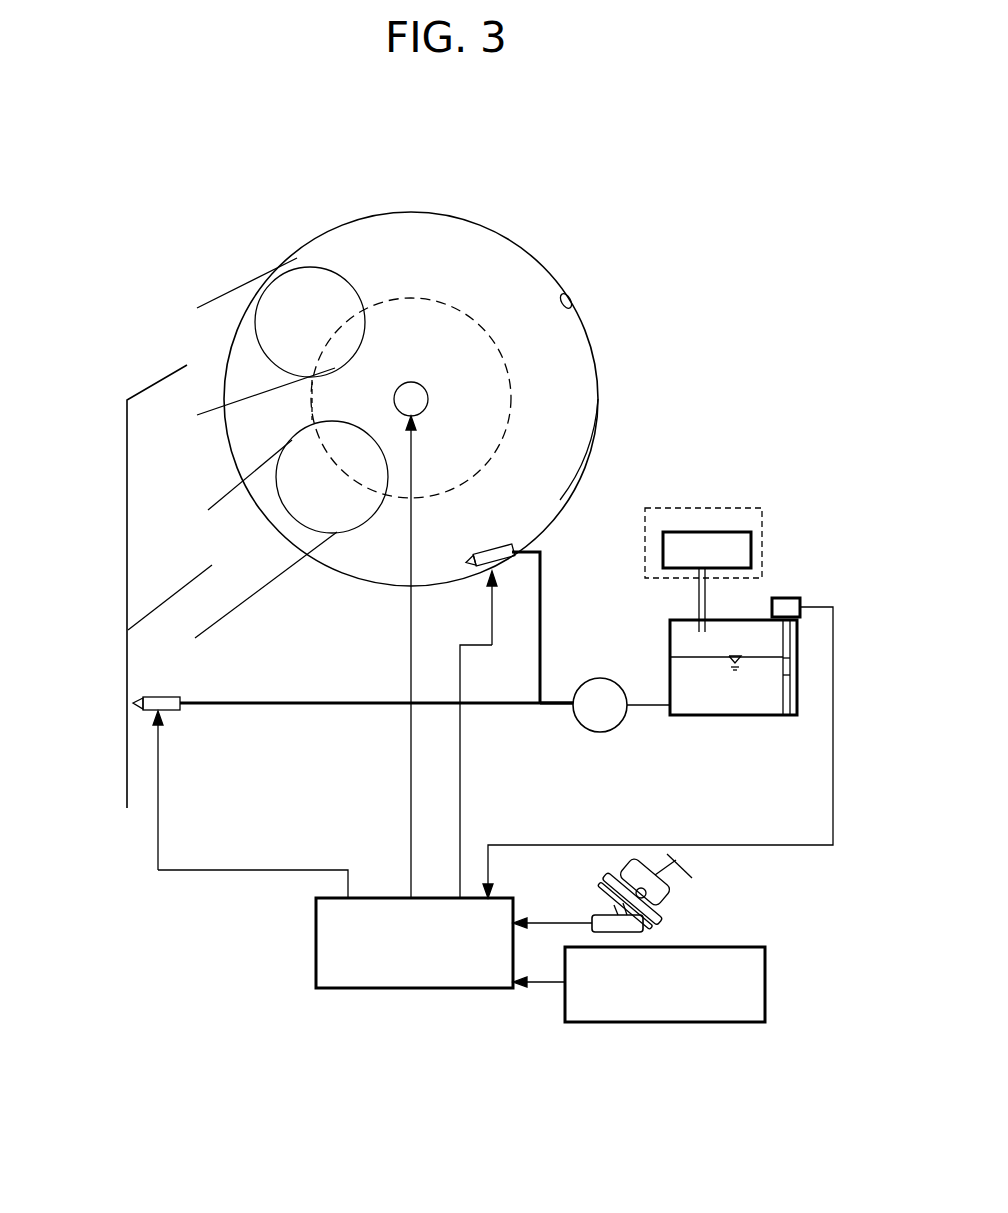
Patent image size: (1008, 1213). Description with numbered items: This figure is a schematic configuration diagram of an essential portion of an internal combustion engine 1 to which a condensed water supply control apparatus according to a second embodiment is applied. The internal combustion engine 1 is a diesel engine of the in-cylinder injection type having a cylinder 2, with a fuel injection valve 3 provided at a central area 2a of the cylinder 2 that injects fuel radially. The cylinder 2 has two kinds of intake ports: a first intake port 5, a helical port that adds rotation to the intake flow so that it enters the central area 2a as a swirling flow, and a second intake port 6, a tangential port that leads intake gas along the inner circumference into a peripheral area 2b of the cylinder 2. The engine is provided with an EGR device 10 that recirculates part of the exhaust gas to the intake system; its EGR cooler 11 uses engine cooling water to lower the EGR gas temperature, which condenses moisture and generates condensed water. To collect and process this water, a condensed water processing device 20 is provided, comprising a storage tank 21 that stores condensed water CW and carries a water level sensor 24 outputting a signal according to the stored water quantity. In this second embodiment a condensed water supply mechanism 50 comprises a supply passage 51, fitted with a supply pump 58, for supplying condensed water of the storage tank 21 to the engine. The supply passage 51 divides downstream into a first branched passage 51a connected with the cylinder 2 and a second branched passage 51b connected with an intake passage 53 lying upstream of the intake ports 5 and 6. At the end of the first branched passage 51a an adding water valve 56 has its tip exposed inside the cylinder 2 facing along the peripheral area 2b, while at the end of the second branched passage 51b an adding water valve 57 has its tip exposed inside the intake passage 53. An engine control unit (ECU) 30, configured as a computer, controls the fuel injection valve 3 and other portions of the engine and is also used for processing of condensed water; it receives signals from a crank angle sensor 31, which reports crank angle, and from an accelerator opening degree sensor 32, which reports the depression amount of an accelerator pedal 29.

The internal combustion engine 1 is at (570, 226).
The cylinder 2 is at (578, 312).
The central area 2a is at (513, 385).
The peripheral area 2b is at (560, 423).
The fuel injection valve 3 is at (429, 395).
The first intake port 5 is at (268, 565).
The second intake port 6 is at (228, 304).
The EGR device 10 is at (706, 508).
The EGR cooler 11 is at (668, 544).
The condensed water processing device 20 is at (805, 490).
The storage tank 21 is at (668, 622).
The water level sensor 24 is at (786, 598).
The accelerator pedal 29 is at (602, 875).
The engine control unit (ECU) 30 is at (316, 940).
The crank angle sensor 31 is at (768, 982).
The accelerator opening degree sensor 32 is at (652, 925).
The condensed water supply mechanism 50 is at (664, 736).
The supply passage 51 is at (550, 716).
The first branched passage 51a is at (541, 583).
The second branched passage 51b is at (312, 700).
The intake passage 53 is at (127, 570).
The adding water valve 56 is at (490, 547).
The adding water valve 57 is at (165, 697).
The supply pump 58 is at (600, 728).
The condensed water CW is at (688, 668).